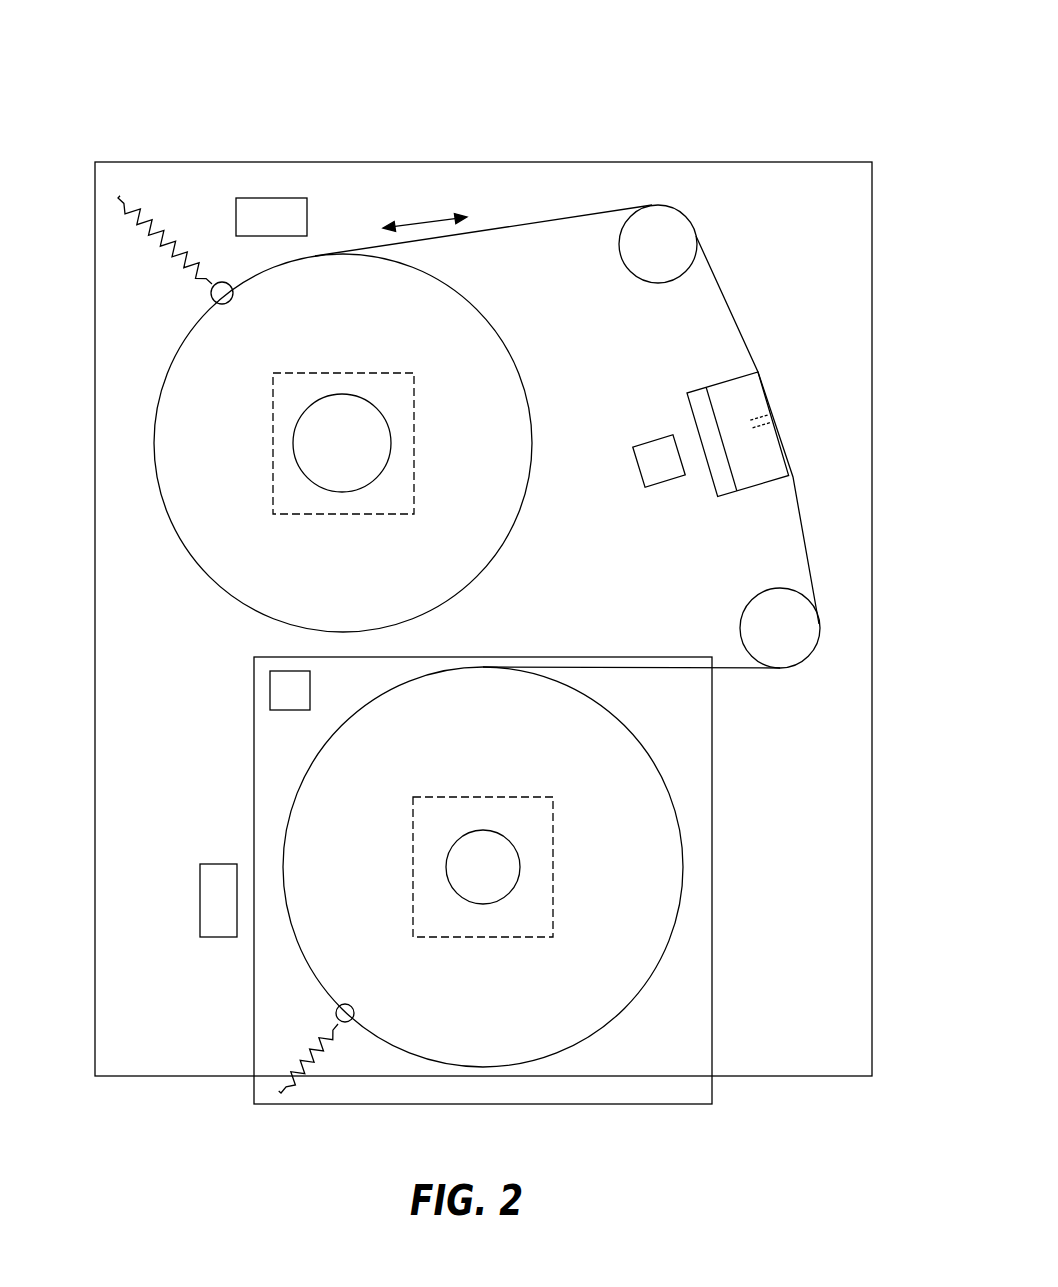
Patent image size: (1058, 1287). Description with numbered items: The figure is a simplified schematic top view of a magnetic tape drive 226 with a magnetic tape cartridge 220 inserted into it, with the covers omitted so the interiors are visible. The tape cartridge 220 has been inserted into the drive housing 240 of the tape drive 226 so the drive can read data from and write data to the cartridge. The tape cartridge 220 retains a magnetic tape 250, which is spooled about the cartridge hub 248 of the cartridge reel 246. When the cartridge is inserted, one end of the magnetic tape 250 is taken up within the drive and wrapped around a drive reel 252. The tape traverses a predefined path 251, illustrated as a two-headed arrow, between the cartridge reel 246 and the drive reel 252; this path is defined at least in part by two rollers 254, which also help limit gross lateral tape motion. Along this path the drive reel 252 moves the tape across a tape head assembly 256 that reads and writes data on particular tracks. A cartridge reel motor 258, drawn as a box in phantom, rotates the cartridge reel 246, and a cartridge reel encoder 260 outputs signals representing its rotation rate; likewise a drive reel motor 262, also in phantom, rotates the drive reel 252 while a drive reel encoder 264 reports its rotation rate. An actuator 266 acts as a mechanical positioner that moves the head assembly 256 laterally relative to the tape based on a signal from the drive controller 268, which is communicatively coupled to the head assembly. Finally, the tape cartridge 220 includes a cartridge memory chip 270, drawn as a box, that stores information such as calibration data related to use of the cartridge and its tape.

The magnetic tape cartridge 220 is at (677, 1105).
The magnetic tape drive 226 is at (793, 114).
The drive housing 240 is at (155, 1077).
The cartridge reel 246 is at (520, 858).
The cartridge hub 248 is at (445, 867).
The magnetic tape 250 is at (504, 228).
The predefined path 251 is at (423, 222).
The drive reel 252 is at (300, 418).
The rollers 254 is at (649, 243).
The tape head assembly 256 is at (768, 448).
The cartridge reel motor 258 is at (553, 893).
The cartridge reel encoder 260 is at (217, 903).
The drive reel motor 262 is at (273, 493).
The drive reel encoder 264 is at (271, 213).
The actuator 266 is at (722, 477).
The drive controller 268 is at (655, 447).
The cartridge memory chip 270 is at (284, 690).